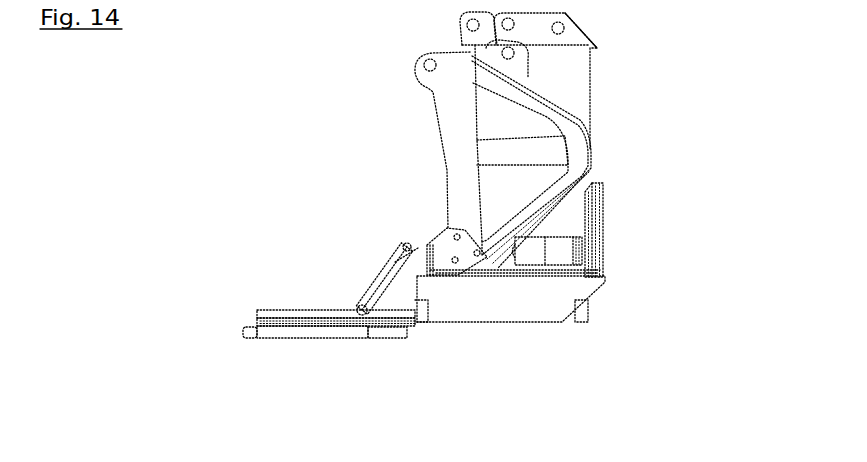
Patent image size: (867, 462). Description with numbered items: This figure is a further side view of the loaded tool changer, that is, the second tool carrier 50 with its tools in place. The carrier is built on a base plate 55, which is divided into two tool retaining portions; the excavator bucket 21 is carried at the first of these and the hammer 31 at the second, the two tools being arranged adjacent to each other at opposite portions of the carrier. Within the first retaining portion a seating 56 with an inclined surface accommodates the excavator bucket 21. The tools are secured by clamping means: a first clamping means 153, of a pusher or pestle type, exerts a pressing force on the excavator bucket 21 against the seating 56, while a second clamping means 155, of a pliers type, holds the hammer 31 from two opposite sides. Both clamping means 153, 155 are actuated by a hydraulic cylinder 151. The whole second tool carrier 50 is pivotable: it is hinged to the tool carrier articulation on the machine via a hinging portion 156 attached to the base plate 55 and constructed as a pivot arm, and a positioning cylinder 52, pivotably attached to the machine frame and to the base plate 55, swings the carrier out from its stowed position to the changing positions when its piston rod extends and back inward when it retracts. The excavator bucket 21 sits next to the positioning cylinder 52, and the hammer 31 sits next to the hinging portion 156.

The second tool carrier 50 is at (266, 147).
The excavator bucket 21 is at (495, 115).
The hammer 31 is at (582, 71).
The seating 56 is at (602, 208).
The second clamping means 155 is at (585, 252).
The base plate 55 is at (562, 322).
The first clamping means 153 is at (430, 263).
The hydraulic cylinder 151 is at (377, 280).
The hinging portion 156 is at (280, 313).
The positioning cylinder 52 is at (303, 333).